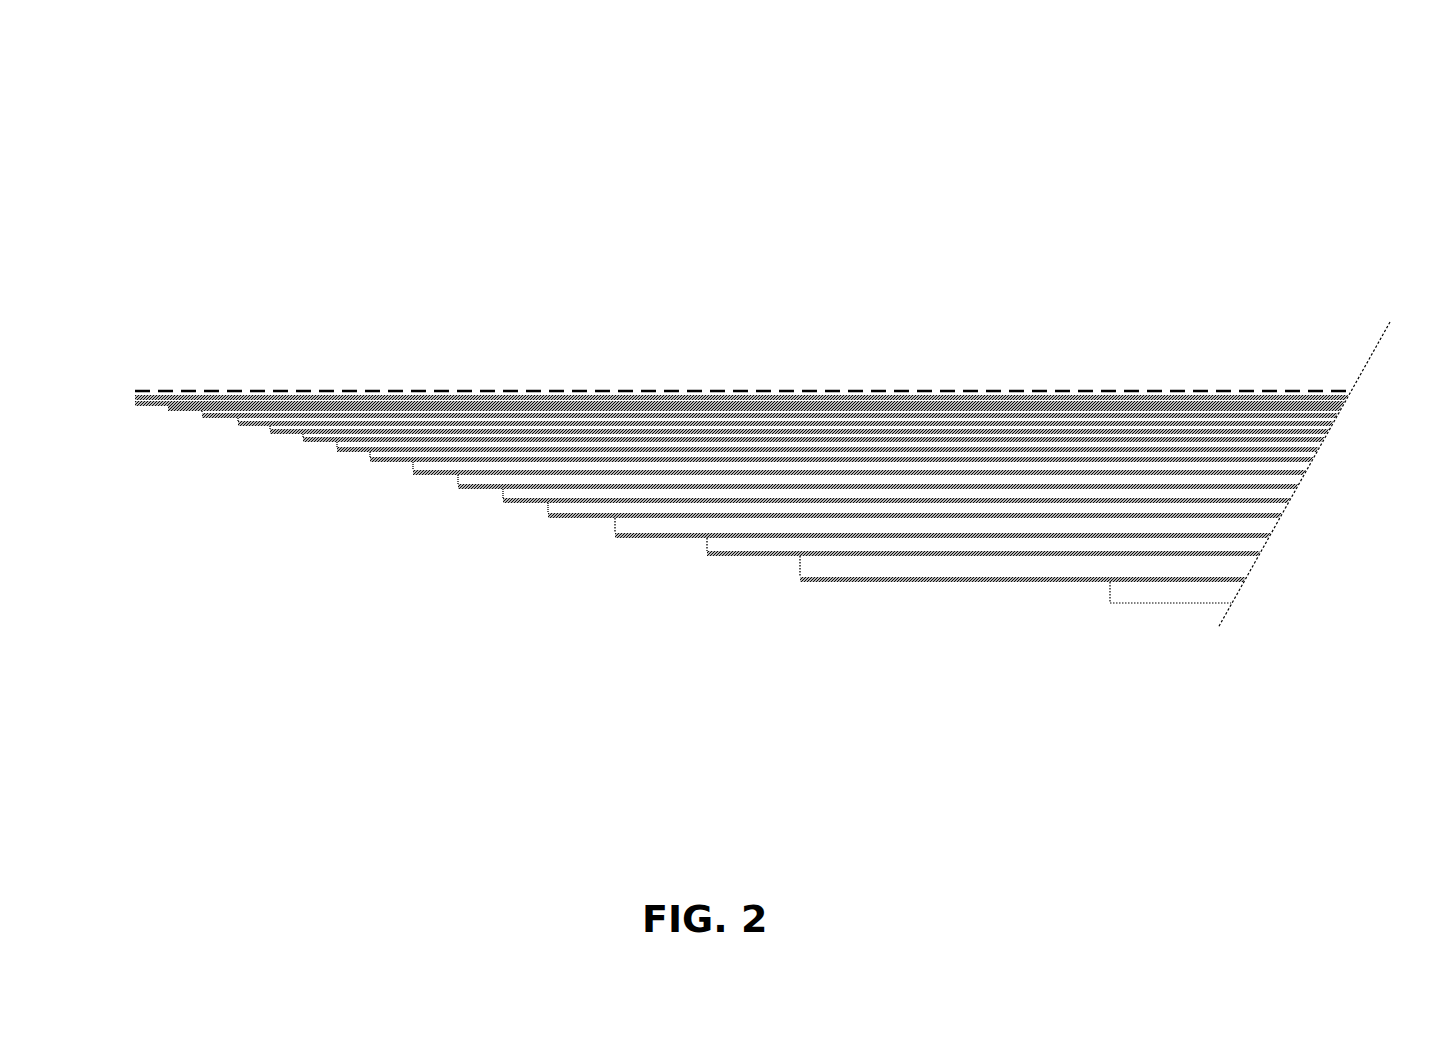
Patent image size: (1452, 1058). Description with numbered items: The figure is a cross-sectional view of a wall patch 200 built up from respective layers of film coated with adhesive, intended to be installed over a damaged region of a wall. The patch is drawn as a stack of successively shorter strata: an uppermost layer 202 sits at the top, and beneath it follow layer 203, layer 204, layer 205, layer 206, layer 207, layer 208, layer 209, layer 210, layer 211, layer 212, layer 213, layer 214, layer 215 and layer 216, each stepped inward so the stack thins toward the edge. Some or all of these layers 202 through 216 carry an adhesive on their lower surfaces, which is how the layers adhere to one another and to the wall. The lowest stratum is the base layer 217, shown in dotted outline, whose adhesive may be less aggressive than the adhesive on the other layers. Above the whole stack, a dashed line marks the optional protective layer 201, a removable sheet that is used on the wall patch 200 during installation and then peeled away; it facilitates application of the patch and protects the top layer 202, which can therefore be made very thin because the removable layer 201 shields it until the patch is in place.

The wall patch 200 is at (1276, 36).
The protective layer 201 is at (270, 390).
The layer 202 is at (158, 393).
The layer 203 is at (175, 413).
The layer 204 is at (222, 421).
The layer 205 is at (260, 432).
The layer 206 is at (296, 438).
The layer 207 is at (328, 447).
The layer 208 is at (348, 457).
The layer 209 is at (410, 468).
The layer 210 is at (456, 481).
The layer 211 is at (502, 496).
The layer 212 is at (547, 510).
The layer 213 is at (612, 523).
The layer 214 is at (672, 543).
The layer 215 is at (761, 560).
The layer 216 is at (873, 586).
The base layer 217 is at (1140, 609).